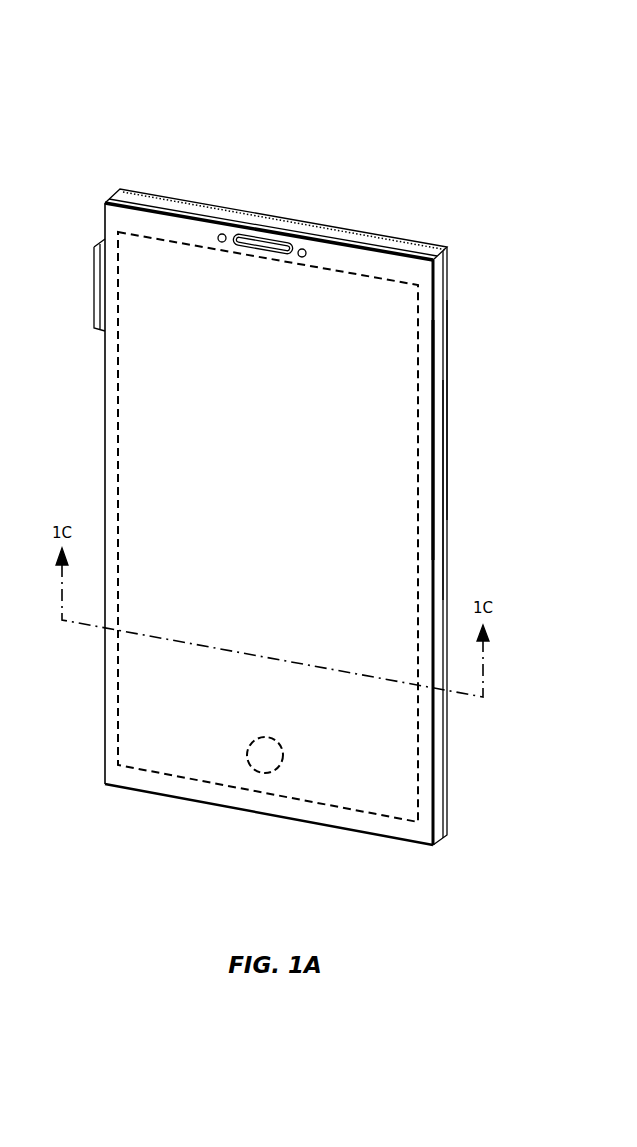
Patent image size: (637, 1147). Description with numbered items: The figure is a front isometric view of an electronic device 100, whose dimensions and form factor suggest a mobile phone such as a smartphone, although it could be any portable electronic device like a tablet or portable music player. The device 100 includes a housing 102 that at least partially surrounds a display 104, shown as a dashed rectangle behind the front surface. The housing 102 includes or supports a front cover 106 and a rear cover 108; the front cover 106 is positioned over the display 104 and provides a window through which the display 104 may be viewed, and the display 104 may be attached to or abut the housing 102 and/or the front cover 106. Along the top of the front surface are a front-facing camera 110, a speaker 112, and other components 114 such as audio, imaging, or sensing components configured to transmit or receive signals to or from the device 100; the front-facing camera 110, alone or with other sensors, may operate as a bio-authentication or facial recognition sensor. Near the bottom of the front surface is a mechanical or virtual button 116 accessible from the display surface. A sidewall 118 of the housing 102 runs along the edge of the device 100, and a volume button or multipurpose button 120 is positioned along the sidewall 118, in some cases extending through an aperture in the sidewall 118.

The electronic device 100 is at (86, 63).
The housing 102 is at (446, 313).
The display 104 is at (418, 353).
The front cover 106 is at (433, 449).
The rear cover 108 is at (447, 407).
The front-facing camera 110 is at (302, 249).
The speaker 112 is at (266, 243).
The other components 114 is at (222, 234).
The button 116 is at (265, 774).
The sidewall 118 is at (439, 493).
The volume button or multipurpose button 120 is at (94, 282).